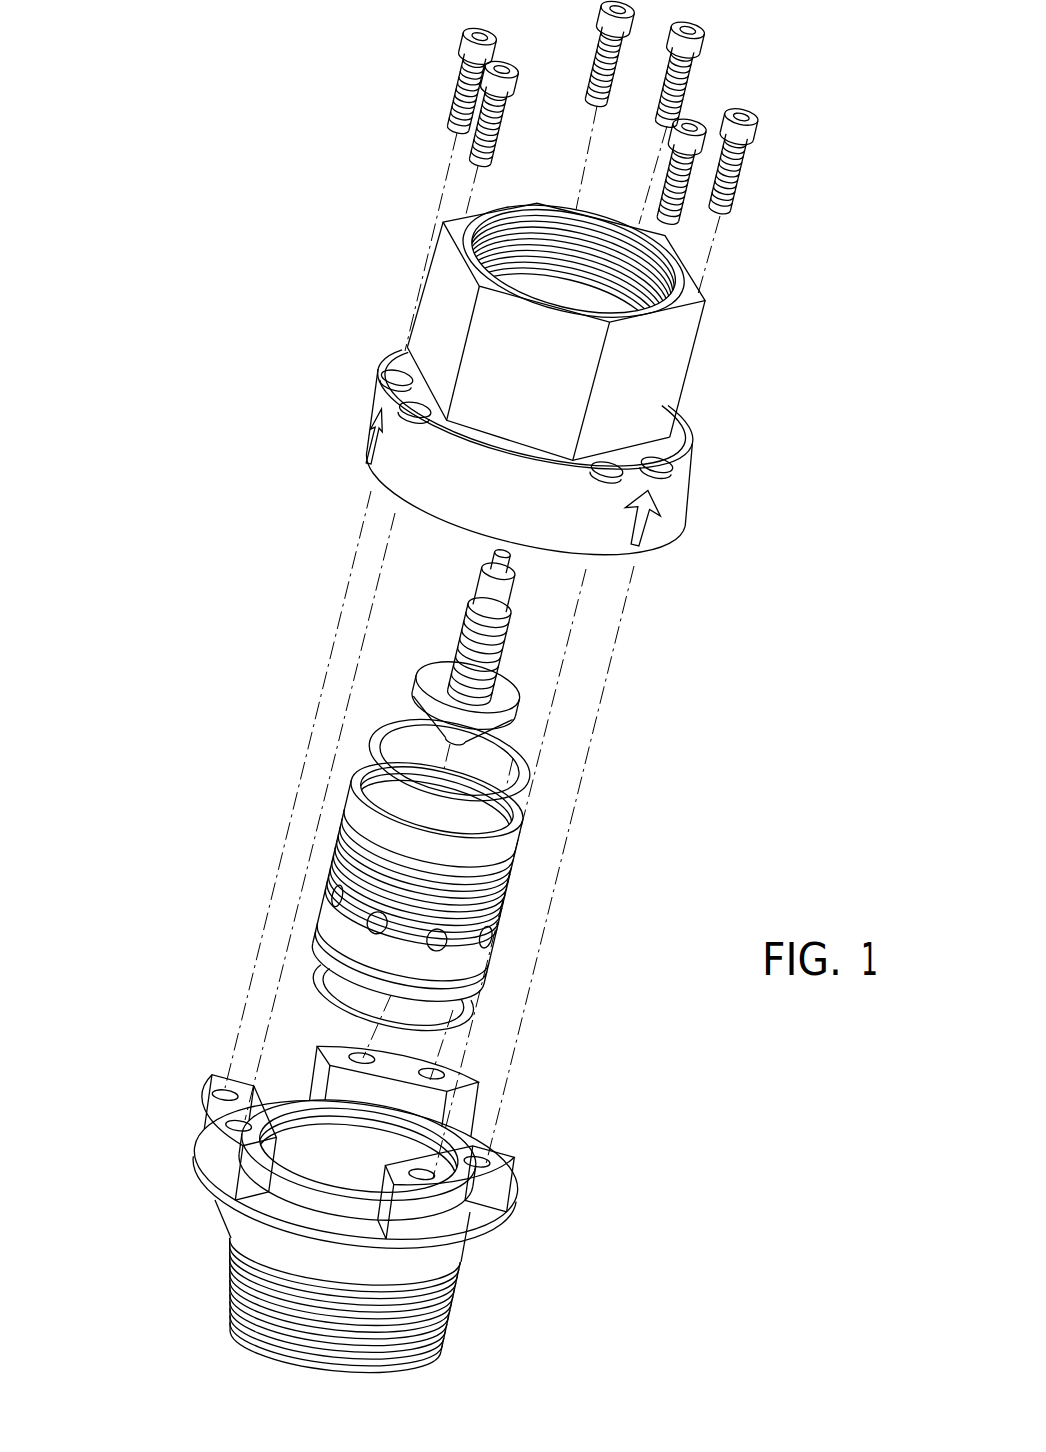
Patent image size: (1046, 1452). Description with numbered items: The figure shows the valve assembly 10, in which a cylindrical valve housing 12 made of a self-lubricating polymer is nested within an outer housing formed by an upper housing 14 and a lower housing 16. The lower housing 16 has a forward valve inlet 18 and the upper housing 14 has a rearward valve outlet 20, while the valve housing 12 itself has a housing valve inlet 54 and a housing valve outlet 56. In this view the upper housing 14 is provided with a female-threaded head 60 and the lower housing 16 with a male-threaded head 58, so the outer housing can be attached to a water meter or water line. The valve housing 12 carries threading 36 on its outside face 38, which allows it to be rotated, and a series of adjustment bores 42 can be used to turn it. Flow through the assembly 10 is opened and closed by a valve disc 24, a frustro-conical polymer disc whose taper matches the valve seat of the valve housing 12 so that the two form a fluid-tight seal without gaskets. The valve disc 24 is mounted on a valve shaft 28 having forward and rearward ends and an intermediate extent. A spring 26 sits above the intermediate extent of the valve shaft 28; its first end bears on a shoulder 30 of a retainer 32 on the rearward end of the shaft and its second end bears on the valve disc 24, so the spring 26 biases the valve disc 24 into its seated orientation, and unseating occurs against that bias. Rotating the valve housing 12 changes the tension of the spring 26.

The assembly 10 is at (243, 165).
The cylindrical valve housing 12 is at (441, 878).
The upper housing 14 is at (680, 392).
The lower housing 16 is at (195, 1130).
The forward valve inlet 18 is at (223, 1320).
The rearward valve outlet 20 is at (497, 240).
The valve disc 24 is at (485, 737).
The spring 26 is at (457, 653).
The valve shaft 28 is at (487, 566).
The shoulder 30 is at (507, 600).
The retainer 32 is at (507, 627).
The threading 36 is at (345, 855).
The outside face 38 is at (355, 823).
The adjustment bores 42 is at (447, 942).
The housing valve inlet 54 is at (360, 973).
The housing valve outlet 56 is at (388, 790).
The male-threaded head 58 is at (423, 1310).
The female-threaded head 60 is at (700, 308).